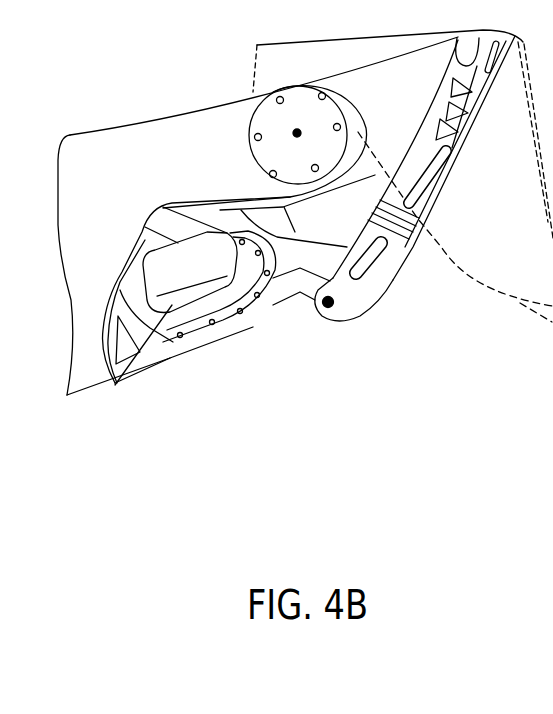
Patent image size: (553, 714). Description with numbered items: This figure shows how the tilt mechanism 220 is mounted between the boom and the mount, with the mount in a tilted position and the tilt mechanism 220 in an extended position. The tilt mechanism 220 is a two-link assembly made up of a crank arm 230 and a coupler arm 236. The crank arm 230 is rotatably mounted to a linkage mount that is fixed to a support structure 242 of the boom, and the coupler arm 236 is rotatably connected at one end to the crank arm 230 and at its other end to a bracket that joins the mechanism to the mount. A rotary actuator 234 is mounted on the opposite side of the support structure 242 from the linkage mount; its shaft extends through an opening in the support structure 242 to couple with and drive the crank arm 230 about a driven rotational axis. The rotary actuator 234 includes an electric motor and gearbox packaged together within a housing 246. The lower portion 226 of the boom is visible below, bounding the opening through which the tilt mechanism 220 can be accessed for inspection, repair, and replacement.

The tilt mechanism 220 is at (350, 356).
The lower portion of the boom 226 is at (98, 390).
The crank arm 230 is at (302, 300).
The rotary actuator 234 is at (213, 323).
The coupler arm 236 is at (385, 280).
The support structure 242 is at (180, 357).
The housing 246 is at (197, 250).